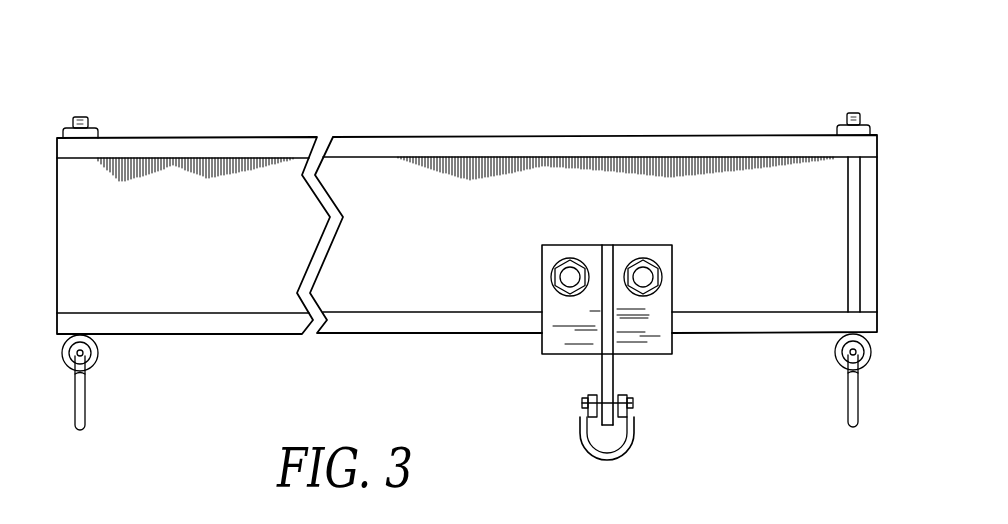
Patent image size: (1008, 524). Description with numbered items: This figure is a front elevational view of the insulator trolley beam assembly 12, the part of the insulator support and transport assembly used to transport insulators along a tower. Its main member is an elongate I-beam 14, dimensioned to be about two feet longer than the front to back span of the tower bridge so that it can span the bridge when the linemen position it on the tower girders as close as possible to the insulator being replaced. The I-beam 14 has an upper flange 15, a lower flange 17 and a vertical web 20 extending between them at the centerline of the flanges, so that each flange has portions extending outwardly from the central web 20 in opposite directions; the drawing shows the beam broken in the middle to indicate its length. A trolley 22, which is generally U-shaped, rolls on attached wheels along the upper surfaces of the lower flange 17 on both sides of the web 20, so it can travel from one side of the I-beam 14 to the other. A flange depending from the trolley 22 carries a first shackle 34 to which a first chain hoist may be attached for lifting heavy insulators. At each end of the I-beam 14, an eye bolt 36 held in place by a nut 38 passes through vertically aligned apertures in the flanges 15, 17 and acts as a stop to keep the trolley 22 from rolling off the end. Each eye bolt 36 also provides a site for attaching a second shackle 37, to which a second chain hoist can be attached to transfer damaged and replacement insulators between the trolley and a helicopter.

The insulator trolley beam assembly 12 is at (522, 98).
The I-beam 14 is at (138, 273).
The upper flange 15 is at (658, 145).
The lower flange 17 is at (215, 327).
The vertical web 20 is at (185, 258).
The trolley 22 is at (663, 345).
The first shackle 34 is at (578, 447).
The eye bolt 36 is at (852, 222).
The second shackle 37 is at (849, 406).
The nut 38 is at (837, 132).